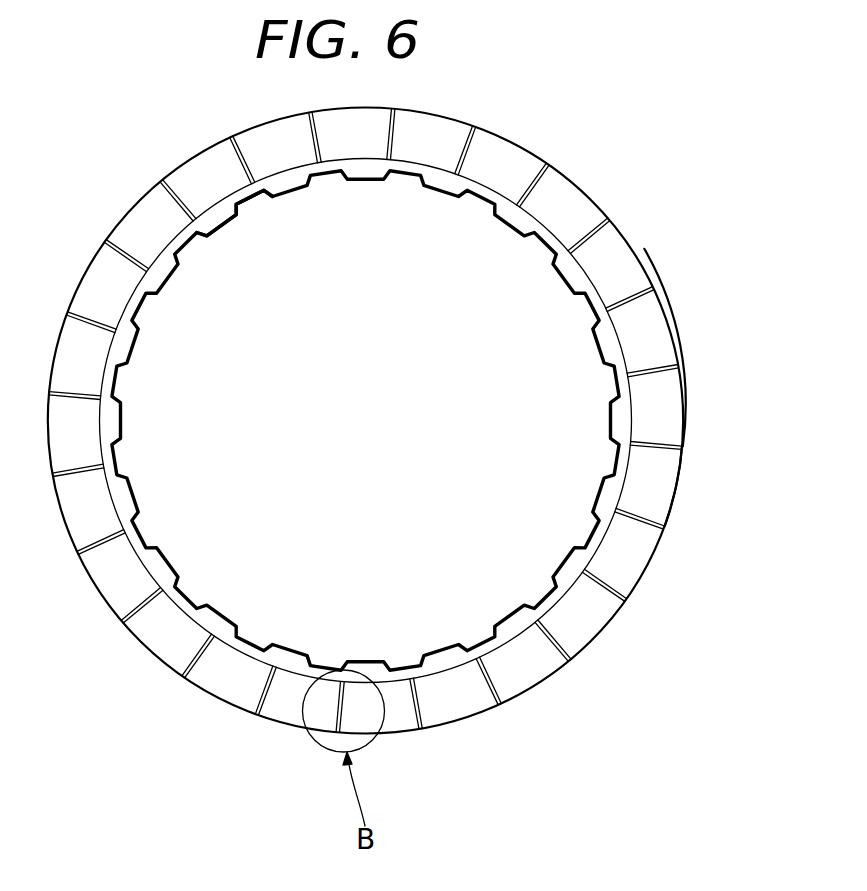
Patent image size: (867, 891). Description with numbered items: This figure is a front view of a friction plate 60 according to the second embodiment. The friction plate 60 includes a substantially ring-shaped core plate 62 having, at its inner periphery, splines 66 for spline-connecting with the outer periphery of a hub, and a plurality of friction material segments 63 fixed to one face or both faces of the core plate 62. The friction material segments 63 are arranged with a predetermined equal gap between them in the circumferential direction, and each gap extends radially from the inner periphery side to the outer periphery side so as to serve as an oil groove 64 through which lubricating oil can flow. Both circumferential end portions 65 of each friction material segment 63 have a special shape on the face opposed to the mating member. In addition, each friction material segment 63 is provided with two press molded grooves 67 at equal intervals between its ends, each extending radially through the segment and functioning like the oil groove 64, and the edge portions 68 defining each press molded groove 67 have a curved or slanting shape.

The friction plate 60 is at (600, 163).
The core plate 62 is at (440, 182).
The friction material segment 63 is at (641, 254).
The oil groove 64 is at (682, 366).
The end portion 65 is at (648, 379).
The spline 66 is at (243, 202).
The press molded groove 67 is at (662, 524).
The edge portion 68 is at (643, 523).